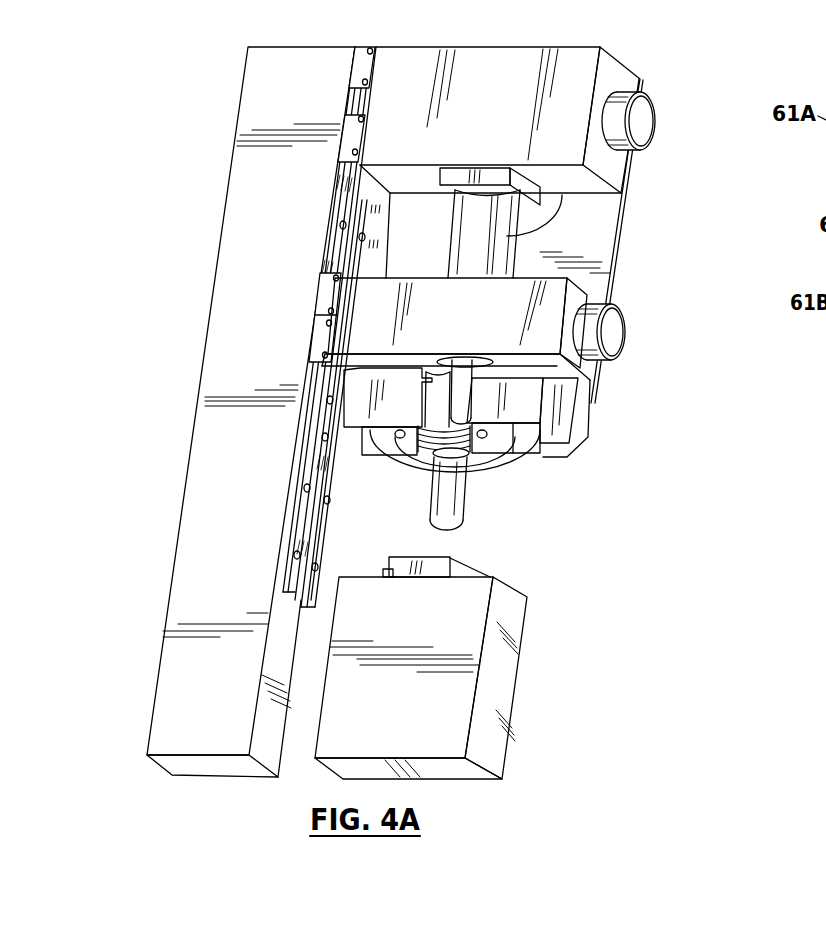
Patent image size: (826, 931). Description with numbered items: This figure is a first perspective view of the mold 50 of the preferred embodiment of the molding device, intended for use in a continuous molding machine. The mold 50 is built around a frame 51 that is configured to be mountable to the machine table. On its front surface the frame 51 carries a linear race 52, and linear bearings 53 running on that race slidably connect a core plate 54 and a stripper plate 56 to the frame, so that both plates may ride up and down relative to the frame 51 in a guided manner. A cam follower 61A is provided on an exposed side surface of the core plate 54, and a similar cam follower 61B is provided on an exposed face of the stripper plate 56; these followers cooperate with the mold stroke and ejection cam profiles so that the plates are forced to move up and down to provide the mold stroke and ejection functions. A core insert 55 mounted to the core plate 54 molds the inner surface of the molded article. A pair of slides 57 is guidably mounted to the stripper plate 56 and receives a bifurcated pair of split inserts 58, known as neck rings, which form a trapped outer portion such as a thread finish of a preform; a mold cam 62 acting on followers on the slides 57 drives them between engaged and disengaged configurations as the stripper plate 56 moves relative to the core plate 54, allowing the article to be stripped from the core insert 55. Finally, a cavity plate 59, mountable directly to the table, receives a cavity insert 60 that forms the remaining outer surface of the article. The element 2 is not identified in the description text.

The probe / pipette tip 2 is at (452, 497).
The mold 50 is at (708, 93).
The frame 51 is at (206, 311).
The linear race 52 is at (346, 250).
The linear bearings 53 is at (330, 290).
The core plate 54 is at (580, 46).
The core insert 55 is at (515, 275).
The stripper plate 56 is at (573, 297).
The slides 57 is at (585, 414).
The split inserts 58 is at (535, 452).
The cavity plate 59 is at (507, 625).
The cavity insert 60 is at (447, 557).
The cam follower 61A is at (645, 121).
The cam follower 61B is at (614, 328).
The mold cam 62 is at (616, 237).